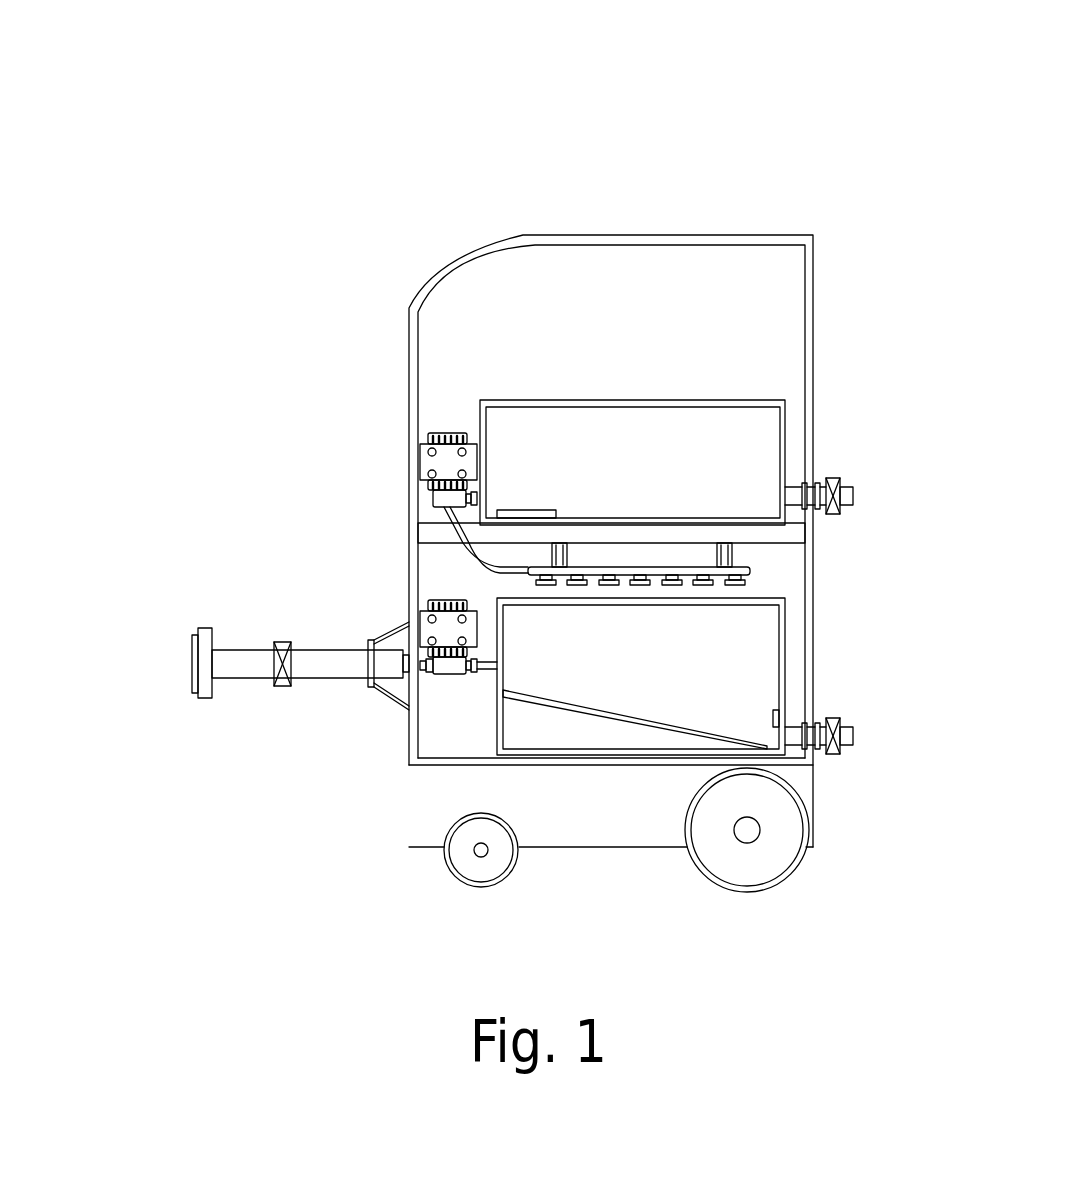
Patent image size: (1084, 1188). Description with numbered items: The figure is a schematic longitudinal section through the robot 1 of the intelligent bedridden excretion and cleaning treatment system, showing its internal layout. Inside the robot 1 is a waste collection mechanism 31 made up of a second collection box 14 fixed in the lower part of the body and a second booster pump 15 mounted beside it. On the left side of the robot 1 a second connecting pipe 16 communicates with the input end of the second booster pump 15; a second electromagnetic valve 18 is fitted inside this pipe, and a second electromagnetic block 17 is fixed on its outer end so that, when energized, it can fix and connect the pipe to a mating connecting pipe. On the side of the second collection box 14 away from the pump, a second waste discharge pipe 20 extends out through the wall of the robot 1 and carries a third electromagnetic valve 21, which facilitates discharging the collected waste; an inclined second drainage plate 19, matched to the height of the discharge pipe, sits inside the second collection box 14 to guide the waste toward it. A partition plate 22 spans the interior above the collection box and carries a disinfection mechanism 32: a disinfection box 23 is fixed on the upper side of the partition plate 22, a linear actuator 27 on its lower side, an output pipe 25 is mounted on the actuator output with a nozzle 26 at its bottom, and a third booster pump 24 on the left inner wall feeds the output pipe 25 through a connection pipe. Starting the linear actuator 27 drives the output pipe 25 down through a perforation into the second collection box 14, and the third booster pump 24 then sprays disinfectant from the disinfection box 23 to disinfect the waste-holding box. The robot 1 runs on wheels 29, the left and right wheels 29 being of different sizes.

The robot 1 is at (552, 762).
The second collection box 14 is at (500, 752).
The second booster pump 15 is at (443, 628).
The second connecting pipe 16 is at (347, 678).
The second electromagnetic block 17 is at (192, 675).
The second electromagnetic valve 18 is at (283, 686).
The second drainage plate 19 is at (648, 727).
The second waste discharge pipe 20 is at (795, 740).
The third electromagnetic valve 21 is at (845, 733).
The partition plate 22 is at (788, 530).
The disinfection box 23 is at (620, 400).
The third booster pump 24 is at (442, 433).
The output pipe 25 is at (750, 577).
The nozzle 26 is at (728, 565).
The linear actuator 27 is at (552, 553).
The wheel 29 is at (505, 878).
The waste collection mechanism 31 is at (560, 804).
The disinfection mechanism 32 is at (541, 292).